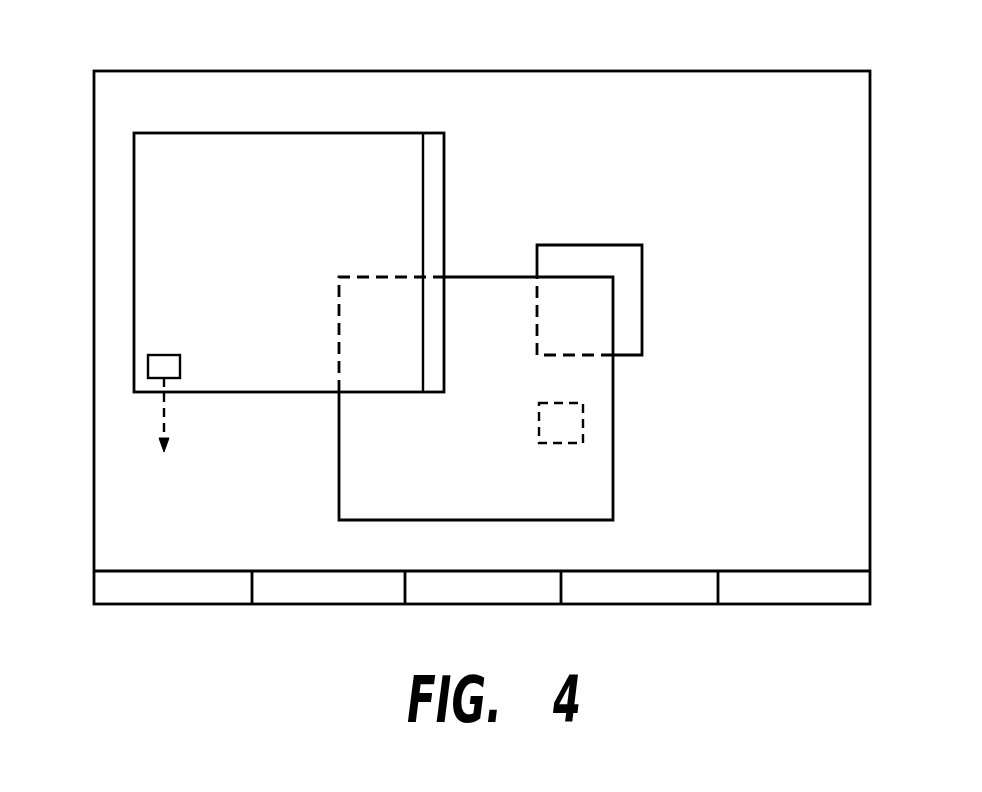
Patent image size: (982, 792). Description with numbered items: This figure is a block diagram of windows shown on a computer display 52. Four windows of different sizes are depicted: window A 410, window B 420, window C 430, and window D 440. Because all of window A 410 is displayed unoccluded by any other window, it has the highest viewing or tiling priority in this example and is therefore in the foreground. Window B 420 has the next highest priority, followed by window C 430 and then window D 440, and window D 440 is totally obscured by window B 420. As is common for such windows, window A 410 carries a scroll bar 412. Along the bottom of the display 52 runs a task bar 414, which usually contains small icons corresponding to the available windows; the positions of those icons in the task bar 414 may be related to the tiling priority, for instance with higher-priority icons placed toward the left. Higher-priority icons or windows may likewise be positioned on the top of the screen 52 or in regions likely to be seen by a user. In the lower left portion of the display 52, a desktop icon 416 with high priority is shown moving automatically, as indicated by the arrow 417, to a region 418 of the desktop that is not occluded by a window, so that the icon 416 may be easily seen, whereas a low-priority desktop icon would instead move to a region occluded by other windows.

The computer display 52 is at (782, 70).
The window A 410 is at (287, 150).
The scroll bar 412 is at (432, 161).
The task bar 414 is at (759, 588).
The desktop icon 416 is at (152, 367).
The arrow 417 is at (163, 410).
The region of the desktop 418 is at (167, 482).
The window B 420 is at (613, 495).
The window C 430 is at (642, 267).
The window D 440 is at (583, 422).